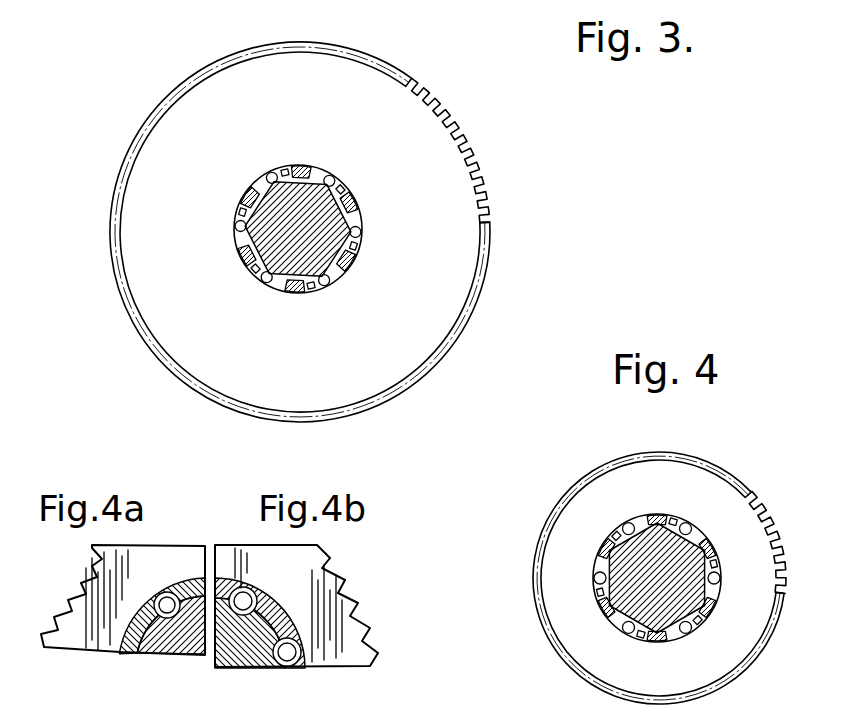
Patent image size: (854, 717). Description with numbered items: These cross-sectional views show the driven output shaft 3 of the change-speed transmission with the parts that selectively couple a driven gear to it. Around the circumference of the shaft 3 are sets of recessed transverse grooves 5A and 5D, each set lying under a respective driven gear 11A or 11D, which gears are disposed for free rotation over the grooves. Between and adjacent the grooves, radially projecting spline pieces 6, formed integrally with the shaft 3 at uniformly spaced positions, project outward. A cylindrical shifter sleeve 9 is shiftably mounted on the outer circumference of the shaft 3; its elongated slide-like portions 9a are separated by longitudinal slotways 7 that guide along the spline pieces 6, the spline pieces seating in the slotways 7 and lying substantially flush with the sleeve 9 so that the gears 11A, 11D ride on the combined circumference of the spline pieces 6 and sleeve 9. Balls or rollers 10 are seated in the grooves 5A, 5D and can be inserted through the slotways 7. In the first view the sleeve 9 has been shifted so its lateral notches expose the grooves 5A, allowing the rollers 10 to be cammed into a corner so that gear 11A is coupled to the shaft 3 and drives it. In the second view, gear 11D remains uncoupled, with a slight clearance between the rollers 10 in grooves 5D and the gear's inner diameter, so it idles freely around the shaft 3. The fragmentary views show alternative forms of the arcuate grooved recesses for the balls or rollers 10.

In FIG. 3, the driven output shaft 3 is at (318, 258).
In FIG. 4, the driven output shaft 3 is at (645, 602).
In FIG. 3, the recessed transverse groove 5A is at (272, 177).
In FIG. 4, the recessed transverse groove 5D is at (696, 534).
In FIG. 3, the spline piece 6 is at (360, 228).
In FIG. 4, the spline piece 6 is at (722, 575).
In FIG. 4, the longitudinal slotway 7 is at (622, 527).
In FIG. 3, the shifter sleeve 9 is at (300, 299).
In FIG. 4, the shifter sleeve 9 is at (667, 514).
In FIG. 3, the slide-like portion 9a is at (303, 169).
In FIG. 4, the slide-like portion 9a is at (604, 548).
In FIG. 3, the roller 10 is at (240, 250).
In FIG. 4, the roller 10 is at (625, 626).
In FIG. 3, the driven gear 11A is at (415, 80).
In FIG. 4, the driven gear 11D is at (751, 497).